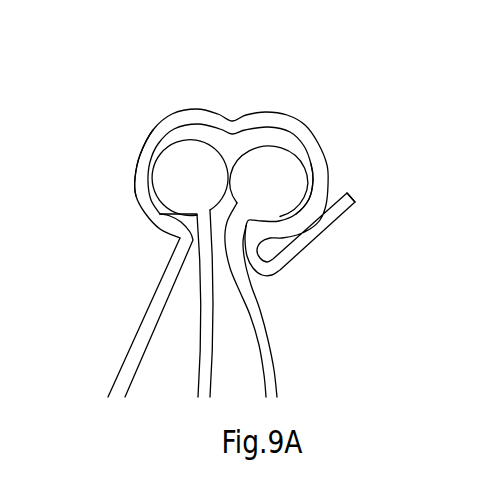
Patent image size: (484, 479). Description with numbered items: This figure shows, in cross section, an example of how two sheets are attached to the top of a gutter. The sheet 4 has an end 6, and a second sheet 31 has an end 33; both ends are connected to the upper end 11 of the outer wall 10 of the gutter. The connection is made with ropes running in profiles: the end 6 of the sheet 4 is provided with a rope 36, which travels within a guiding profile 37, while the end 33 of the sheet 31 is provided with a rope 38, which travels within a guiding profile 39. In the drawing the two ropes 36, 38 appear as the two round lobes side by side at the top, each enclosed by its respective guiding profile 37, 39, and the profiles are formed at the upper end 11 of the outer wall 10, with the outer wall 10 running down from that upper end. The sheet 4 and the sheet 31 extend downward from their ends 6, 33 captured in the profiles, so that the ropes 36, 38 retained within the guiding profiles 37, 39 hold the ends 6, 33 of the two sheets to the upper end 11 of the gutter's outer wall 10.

The sheet 4 is at (204, 362).
The end 6 is at (175, 157).
The outer wall 10 is at (148, 332).
The upper end 11 is at (147, 154).
The sheet 31 is at (248, 310).
The end 33 is at (288, 167).
The rope 36 is at (185, 155).
The guiding profile 37 is at (143, 180).
The rope 38 is at (272, 162).
The guiding profile 39 is at (323, 185).